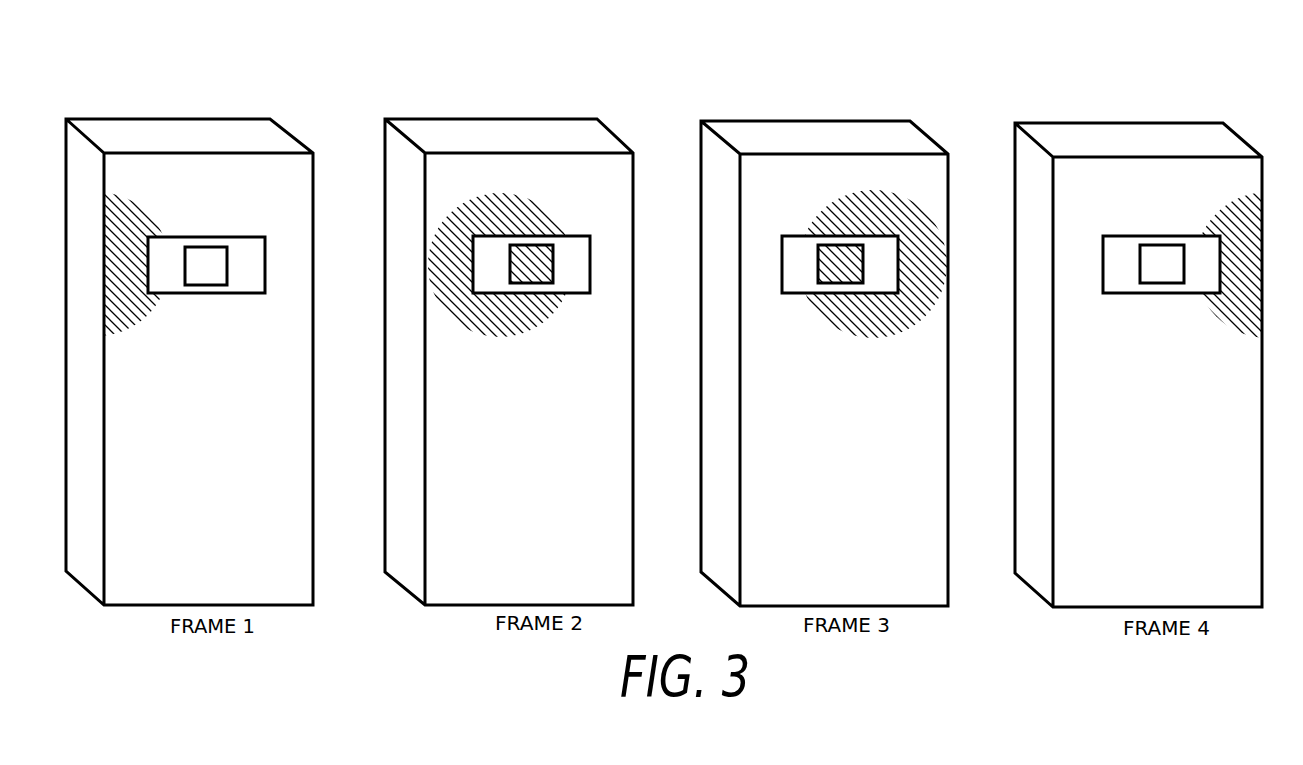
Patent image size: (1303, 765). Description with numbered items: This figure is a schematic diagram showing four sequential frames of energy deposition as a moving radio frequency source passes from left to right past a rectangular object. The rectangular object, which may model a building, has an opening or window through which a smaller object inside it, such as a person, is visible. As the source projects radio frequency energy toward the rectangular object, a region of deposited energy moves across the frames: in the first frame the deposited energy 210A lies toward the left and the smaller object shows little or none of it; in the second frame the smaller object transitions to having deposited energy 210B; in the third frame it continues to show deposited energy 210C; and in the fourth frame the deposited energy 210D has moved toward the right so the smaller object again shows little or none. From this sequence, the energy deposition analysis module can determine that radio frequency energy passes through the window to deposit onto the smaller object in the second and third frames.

The deposited energy 210A is at (123, 349).
The deposited energy 210B is at (458, 334).
The deposited energy 210C is at (913, 332).
The deposited energy 210D is at (1248, 349).